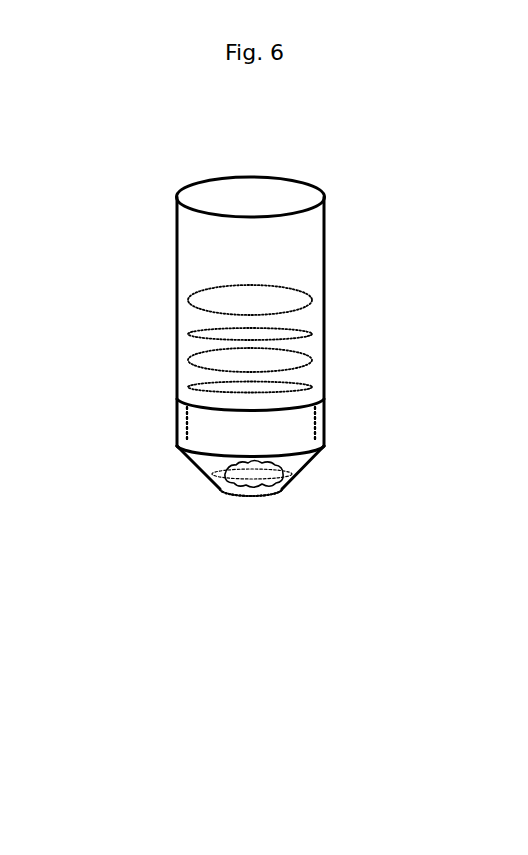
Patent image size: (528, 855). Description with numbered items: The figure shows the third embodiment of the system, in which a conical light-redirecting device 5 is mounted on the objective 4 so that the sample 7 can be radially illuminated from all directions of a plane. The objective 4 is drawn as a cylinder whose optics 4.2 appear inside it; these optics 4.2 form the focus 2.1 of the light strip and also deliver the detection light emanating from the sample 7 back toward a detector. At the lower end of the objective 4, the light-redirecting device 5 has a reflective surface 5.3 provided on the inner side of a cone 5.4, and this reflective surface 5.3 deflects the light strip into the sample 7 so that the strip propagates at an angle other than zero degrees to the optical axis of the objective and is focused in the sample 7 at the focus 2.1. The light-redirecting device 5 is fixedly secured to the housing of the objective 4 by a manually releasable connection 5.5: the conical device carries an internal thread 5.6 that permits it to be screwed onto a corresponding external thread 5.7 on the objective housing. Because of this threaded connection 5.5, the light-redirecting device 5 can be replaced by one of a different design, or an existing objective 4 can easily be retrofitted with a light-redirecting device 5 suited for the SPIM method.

The objective 4 is at (109, 322).
The optics 4.2 is at (182, 382).
The light-redirecting device 5 is at (126, 633).
The reflective surface 5.3 is at (198, 467).
The cone 5.4 is at (207, 477).
The manually releasable connection 5.5 is at (355, 375).
The internal thread 5.6 is at (176, 423).
The external thread 5.7 is at (177, 435).
The sample 7 is at (247, 481).
The focus 2.1 is at (262, 478).